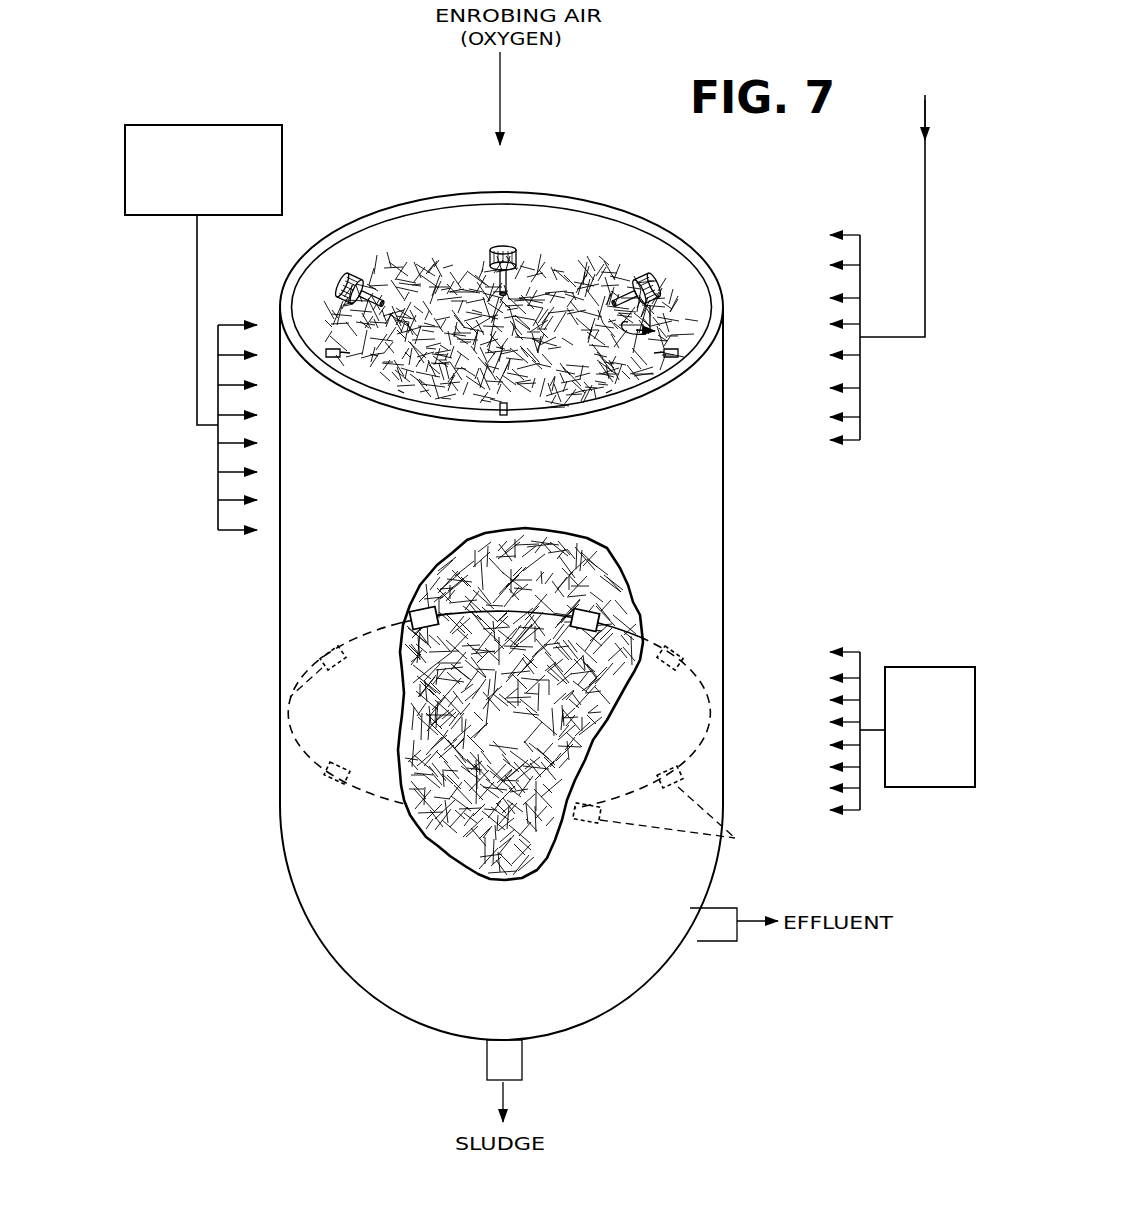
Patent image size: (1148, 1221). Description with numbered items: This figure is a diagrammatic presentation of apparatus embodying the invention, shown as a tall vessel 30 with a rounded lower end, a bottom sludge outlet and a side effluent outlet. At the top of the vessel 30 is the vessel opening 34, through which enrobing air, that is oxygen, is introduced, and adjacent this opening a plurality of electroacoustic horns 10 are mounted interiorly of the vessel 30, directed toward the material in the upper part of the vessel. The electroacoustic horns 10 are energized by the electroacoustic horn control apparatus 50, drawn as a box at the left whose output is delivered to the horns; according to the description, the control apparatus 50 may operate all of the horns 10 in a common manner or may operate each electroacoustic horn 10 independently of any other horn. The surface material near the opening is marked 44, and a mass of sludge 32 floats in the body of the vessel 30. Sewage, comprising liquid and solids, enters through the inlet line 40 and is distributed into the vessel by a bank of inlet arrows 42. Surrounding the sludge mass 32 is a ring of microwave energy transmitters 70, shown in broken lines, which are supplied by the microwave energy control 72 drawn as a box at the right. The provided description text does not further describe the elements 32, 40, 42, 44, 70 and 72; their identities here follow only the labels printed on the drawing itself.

The electroacoustic horn 10 is at (497, 255).
The vessel 30 is at (280, 645).
The sludge mass 32 is at (527, 735).
The vessel opening 34 is at (540, 285).
The sewage inlet 40 is at (930, 300).
The inlet jets 42 is at (850, 235).
The surface layer 44 is at (527, 324).
The electroacoustic horn control apparatus 50 is at (190, 280).
The microwave energy transmitters 70 is at (268, 732).
The microwave energy control 72 is at (899, 792).